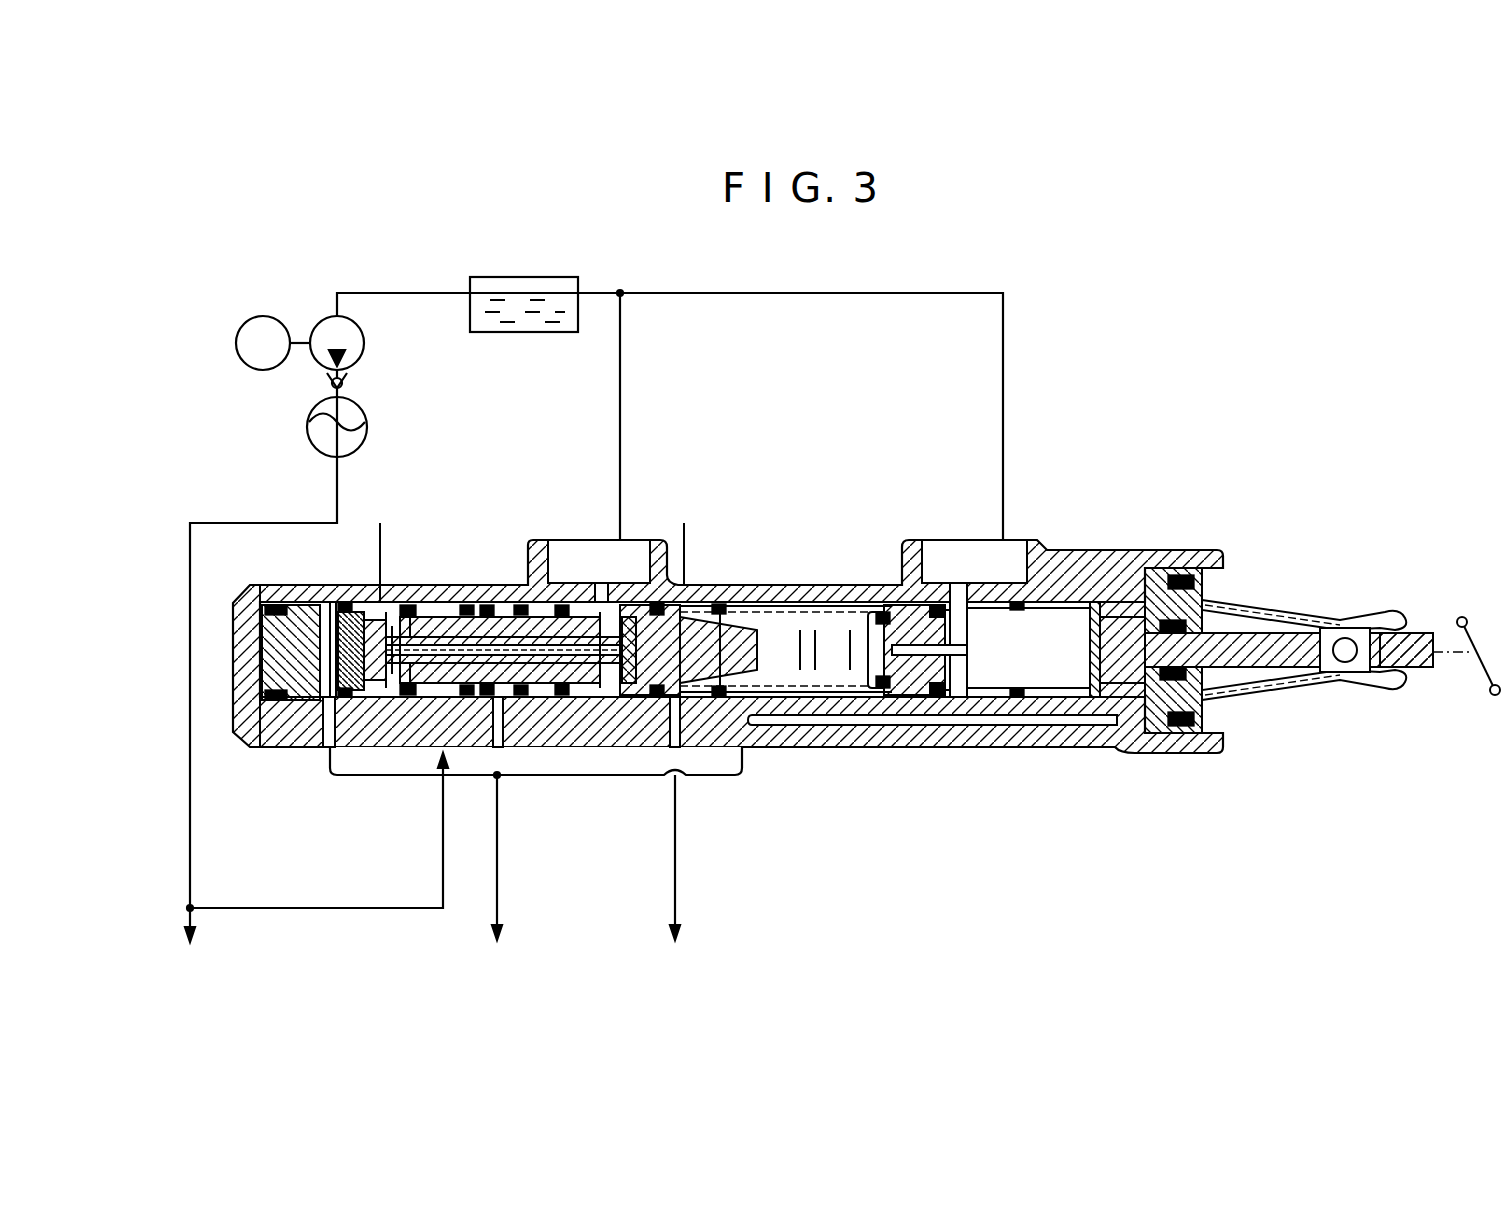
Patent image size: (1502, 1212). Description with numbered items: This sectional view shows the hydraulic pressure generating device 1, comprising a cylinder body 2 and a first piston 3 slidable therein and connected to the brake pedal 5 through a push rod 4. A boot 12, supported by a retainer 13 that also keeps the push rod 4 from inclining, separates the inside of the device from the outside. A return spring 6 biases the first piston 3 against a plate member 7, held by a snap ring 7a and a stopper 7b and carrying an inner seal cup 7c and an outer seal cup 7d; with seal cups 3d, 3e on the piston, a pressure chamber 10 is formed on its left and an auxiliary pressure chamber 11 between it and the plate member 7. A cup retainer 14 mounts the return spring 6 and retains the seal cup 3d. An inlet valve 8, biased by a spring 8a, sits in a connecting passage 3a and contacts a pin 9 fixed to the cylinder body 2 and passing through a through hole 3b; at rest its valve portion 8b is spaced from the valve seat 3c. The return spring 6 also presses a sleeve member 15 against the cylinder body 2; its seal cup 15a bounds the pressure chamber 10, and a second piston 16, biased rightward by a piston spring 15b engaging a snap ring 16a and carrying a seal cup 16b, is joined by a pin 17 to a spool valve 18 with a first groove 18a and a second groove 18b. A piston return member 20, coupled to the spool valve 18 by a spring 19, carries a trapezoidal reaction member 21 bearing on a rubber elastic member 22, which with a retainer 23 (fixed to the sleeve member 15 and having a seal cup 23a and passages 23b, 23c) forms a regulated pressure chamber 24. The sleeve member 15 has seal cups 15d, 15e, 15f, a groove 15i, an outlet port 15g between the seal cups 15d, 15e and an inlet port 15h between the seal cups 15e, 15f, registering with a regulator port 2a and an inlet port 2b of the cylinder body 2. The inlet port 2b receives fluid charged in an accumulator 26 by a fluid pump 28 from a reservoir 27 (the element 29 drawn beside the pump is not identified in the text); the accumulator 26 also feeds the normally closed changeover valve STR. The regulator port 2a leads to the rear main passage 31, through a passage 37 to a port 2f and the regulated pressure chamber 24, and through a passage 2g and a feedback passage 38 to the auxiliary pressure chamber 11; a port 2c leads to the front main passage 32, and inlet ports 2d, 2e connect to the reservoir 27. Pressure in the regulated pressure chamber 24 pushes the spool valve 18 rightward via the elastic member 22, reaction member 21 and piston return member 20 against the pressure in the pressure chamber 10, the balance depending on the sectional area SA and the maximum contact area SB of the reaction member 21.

The hydraulic pressure generating device 1 is at (1065, 480).
The cylinder body 2 is at (1115, 572).
The regulator port 2a is at (498, 748).
The inlet port 2b is at (425, 776).
The port 2c is at (678, 748).
The inlet port 2d is at (970, 556).
The inlet port 2e is at (628, 556).
The port 2f is at (330, 756).
The passage 2g is at (1003, 718).
The first piston 3 is at (1127, 637).
The connecting passage 3a is at (918, 602).
The through hole 3b is at (1017, 603).
The valve seat 3c is at (960, 700).
The seal cup 3d is at (926, 700).
The seal cup 3e is at (1095, 698).
The push rod 4 is at (1385, 612).
The brake pedal 5 is at (1480, 690).
The return spring 6 is at (800, 698).
The plate member 7 is at (1205, 722).
The snap ring 7a is at (1190, 578).
The stopper 7b is at (1155, 740).
The inner seal cup 7c is at (1215, 682).
The outer seal cup 7d is at (1195, 740).
The inlet valve 8 is at (890, 600).
The spring 8a is at (878, 698).
The valve portion 8b is at (886, 698).
The pin 9 is at (958, 650).
The pressure chamber 10 is at (815, 698).
The auxiliary pressure chamber 11 is at (1125, 735).
The boot 12 is at (1405, 690).
The retainer 13 is at (1345, 682).
The cup retainer 14 is at (850, 698).
The sleeve member 15 is at (570, 705).
The seal cup 15a is at (630, 705).
The piston spring 15b is at (730, 604).
The seal cup 15d is at (520, 604).
The seal cup 15e is at (468, 604).
The seal cup 15f is at (408, 604).
The outlet port 15g is at (476, 700).
The inlet port 15h is at (402, 705).
The groove 15i is at (394, 705).
The second piston 16 is at (776, 610).
The snap ring 16a is at (745, 705).
The seal cup 16b is at (652, 705).
The pin 17 is at (602, 705).
The spool valve 18 is at (540, 705).
The first groove 18a is at (486, 604).
The second groove 18b is at (560, 604).
The spring 19 is at (378, 700).
The piston return member 20 is at (350, 700).
The reaction member 21 is at (372, 620).
The elastic member 22 is at (345, 610).
The retainer 23 is at (257, 660).
The seal cup 23a is at (265, 607).
The passage 23b is at (255, 690).
The passage 23c is at (284, 600).
The regulated pressure chamber 24 is at (300, 590).
The accumulator 26 is at (310, 415).
The reservoir 27 is at (475, 305).
The fluid pump 28 is at (332, 318).
The motor 29 is at (245, 325).
The main passage 31 is at (497, 885).
The main passage 32 is at (675, 885).
The passage 37 is at (412, 720).
The feedback passage 38 is at (722, 705).
The sectional area SA is at (690, 538).
The maximum contact area SB is at (380, 549).
The changeover valve STR is at (198, 941).